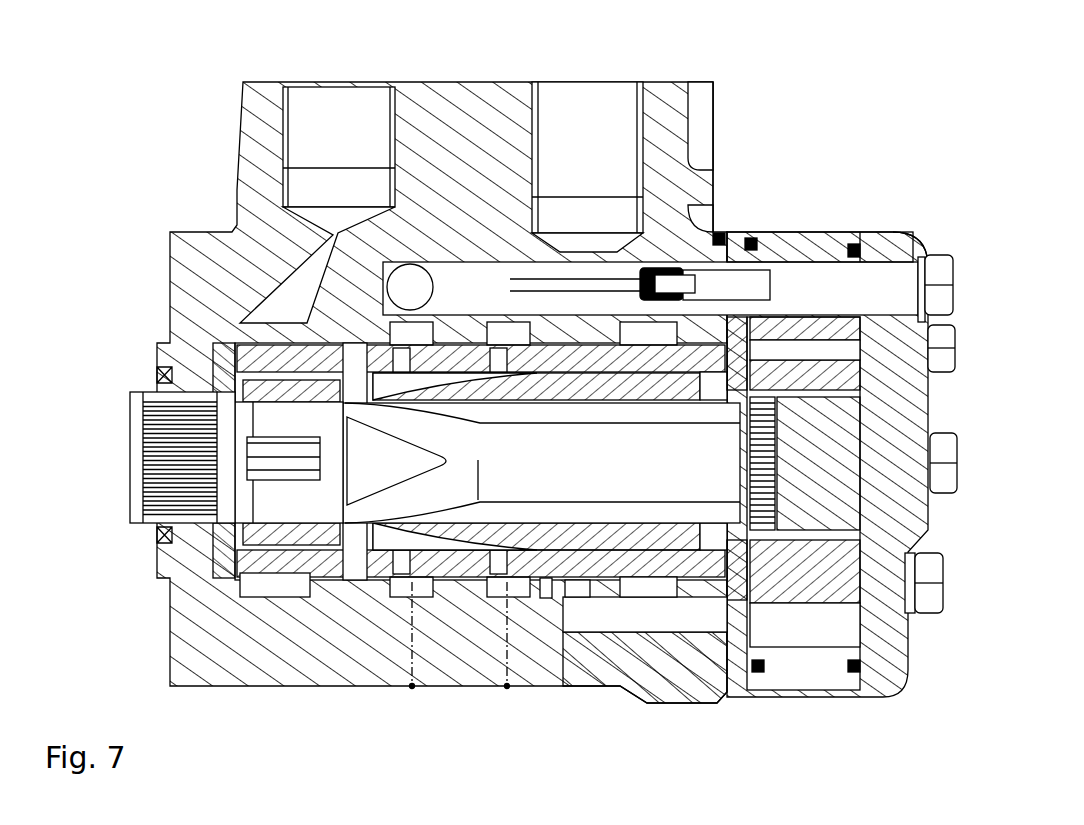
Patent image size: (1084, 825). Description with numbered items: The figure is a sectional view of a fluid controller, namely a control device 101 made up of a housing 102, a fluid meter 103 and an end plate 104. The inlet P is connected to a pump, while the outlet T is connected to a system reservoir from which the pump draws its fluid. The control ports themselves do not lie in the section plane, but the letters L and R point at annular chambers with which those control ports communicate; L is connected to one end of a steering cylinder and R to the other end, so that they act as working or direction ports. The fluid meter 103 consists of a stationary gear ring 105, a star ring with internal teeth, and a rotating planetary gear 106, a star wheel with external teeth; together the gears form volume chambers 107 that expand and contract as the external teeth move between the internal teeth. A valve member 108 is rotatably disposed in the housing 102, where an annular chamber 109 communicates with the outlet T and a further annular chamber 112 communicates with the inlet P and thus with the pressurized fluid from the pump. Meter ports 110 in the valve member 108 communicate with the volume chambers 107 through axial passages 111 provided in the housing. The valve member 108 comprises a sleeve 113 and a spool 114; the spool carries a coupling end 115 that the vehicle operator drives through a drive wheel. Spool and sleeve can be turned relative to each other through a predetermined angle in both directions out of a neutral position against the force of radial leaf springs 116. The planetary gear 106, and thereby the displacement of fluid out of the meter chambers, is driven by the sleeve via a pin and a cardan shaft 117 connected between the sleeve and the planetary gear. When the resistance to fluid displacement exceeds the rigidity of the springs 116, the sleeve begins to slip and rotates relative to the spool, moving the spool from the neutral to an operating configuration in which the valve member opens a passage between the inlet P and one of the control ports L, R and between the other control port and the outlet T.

The control device 101 is at (722, 143).
The housing 102 is at (240, 104).
The fluid meter 103 is at (850, 225).
The end plate 104 is at (893, 232).
The stationary gear ring 105 is at (808, 240).
The planetary gear 106 is at (875, 635).
The volume chambers 107 is at (775, 632).
The valve member 108 is at (545, 582).
The annular chamber 109 is at (273, 590).
The meter ports 110 is at (577, 600).
The axial passages 111 is at (673, 613).
The annular chamber 112 is at (652, 582).
The sleeve 113 is at (440, 316).
The spool 114 is at (535, 385).
The coupling end 115 is at (138, 393).
The radial leaf springs 116 is at (277, 463).
The cardan shaft 117 is at (705, 388).
The outlet T is at (318, 108).
The inlet P is at (633, 142).
The control port L is at (411, 655).
The control port R is at (507, 655).